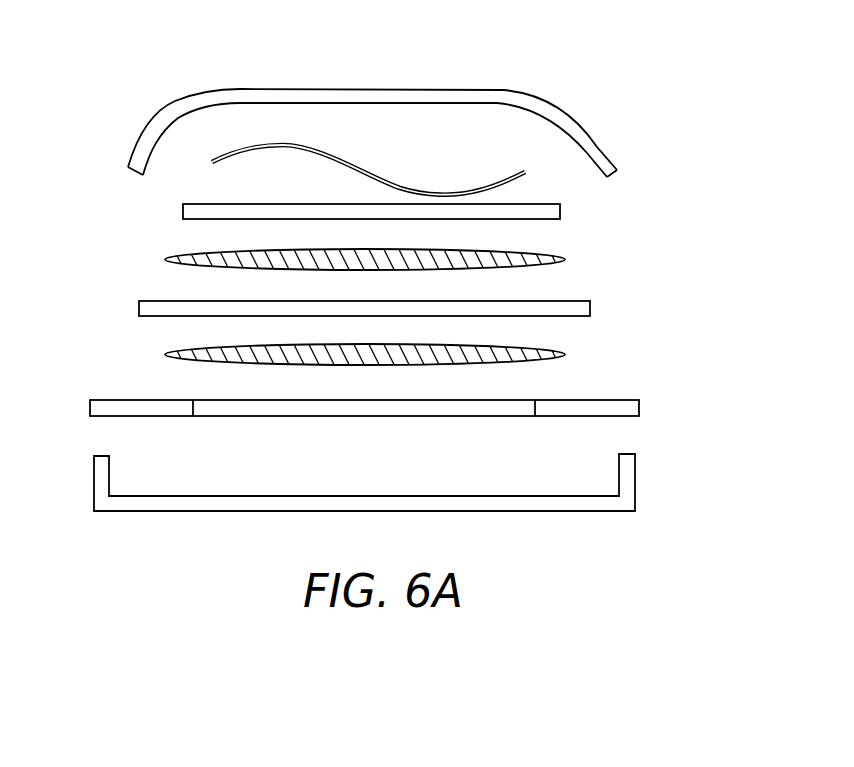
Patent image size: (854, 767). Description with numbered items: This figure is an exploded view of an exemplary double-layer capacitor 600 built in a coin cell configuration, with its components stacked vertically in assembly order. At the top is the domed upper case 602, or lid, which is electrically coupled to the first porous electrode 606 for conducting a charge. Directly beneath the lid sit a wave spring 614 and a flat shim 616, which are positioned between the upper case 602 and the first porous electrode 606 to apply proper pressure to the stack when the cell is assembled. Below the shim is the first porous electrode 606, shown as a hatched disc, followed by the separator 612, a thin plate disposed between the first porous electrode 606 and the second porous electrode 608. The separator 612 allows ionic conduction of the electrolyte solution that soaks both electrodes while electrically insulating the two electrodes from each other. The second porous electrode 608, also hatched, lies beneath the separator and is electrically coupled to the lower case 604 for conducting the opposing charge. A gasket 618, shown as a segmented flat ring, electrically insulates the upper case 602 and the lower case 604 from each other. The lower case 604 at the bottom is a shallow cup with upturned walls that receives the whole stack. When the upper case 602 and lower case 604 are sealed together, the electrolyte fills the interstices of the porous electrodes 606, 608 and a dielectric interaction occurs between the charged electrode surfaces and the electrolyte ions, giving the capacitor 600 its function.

The double-layer capacitor 600 is at (649, 63).
The upper case 602 is at (220, 95).
The lower case 604 is at (197, 503).
The first porous electrode 606 is at (172, 258).
The second porous electrode 608 is at (166, 353).
The separator 612 is at (145, 301).
The wave spring 614 is at (212, 162).
The shim 616 is at (556, 212).
The gasket 618 is at (142, 405).